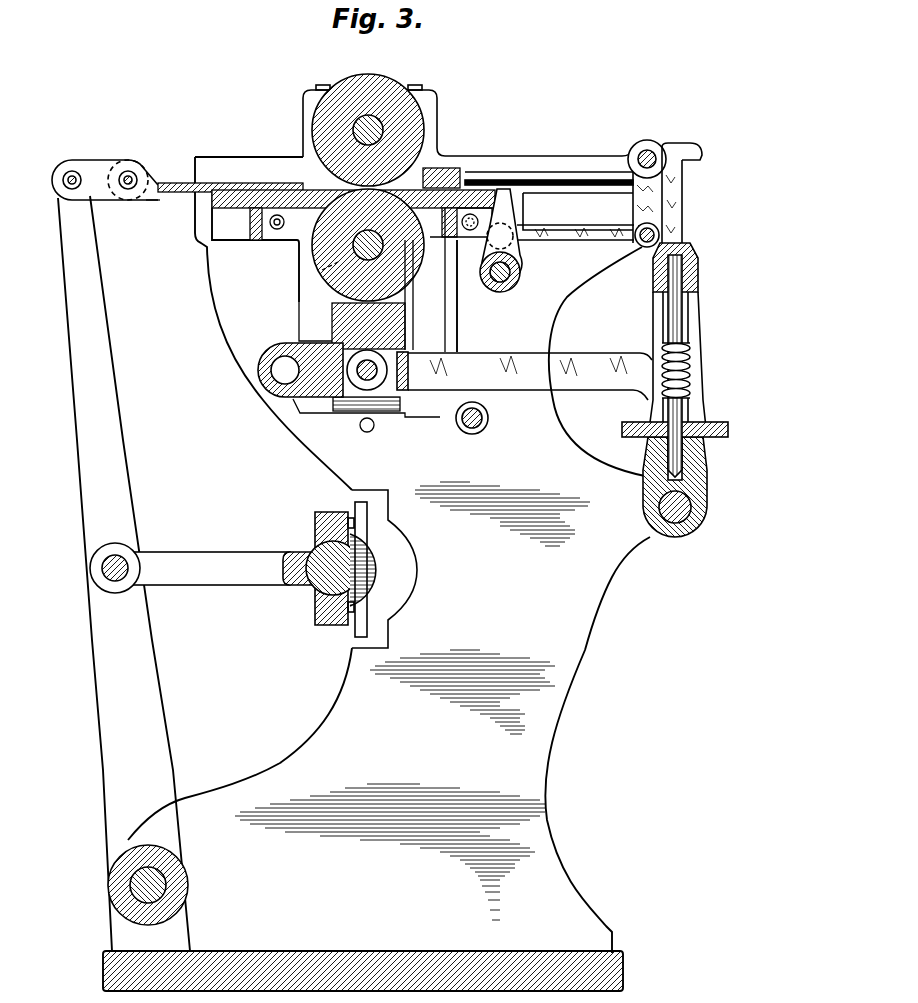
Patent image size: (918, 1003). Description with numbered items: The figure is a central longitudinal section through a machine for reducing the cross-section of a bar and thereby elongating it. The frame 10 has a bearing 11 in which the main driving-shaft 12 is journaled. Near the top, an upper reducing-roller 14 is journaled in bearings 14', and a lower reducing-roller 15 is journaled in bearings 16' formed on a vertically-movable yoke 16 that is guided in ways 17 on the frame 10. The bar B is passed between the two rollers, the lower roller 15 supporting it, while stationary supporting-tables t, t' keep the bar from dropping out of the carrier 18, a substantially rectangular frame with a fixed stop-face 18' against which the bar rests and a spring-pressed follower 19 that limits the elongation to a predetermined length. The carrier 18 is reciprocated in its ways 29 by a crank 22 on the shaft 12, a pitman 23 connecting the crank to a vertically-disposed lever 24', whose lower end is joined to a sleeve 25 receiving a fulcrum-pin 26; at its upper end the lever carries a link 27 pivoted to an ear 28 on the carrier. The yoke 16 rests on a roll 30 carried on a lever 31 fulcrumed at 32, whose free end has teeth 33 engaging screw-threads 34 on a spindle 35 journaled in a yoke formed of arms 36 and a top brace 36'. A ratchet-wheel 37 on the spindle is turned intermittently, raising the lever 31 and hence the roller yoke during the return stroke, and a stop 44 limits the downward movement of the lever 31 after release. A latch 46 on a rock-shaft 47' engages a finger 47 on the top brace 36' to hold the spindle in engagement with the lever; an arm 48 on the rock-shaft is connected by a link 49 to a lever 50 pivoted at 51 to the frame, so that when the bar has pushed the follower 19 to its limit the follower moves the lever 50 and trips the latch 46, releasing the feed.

The frame 10 is at (572, 658).
The bearing 11 is at (355, 623).
The main driving-shaft 12 is at (382, 570).
The reducing-roller 14 is at (383, 126).
The bearings 14' is at (362, 121).
The reducing-roller 15 is at (398, 277).
The yoke 16 is at (382, 320).
The bearings 16' is at (297, 280).
The ways 17 is at (331, 300).
The carrier 18 is at (230, 167).
The stop-face 18' is at (210, 164).
The follower 19 is at (424, 170).
The crank 22 is at (303, 592).
The pitman 23 is at (202, 558).
The lever 24' is at (124, 573).
The sleeve 25 is at (188, 885).
The fulcrum-pin 26 is at (160, 870).
The link 27 is at (95, 178).
The ear 28 is at (150, 192).
The ways 29 is at (549, 195).
The roll 30 is at (360, 387).
The lever 31 is at (525, 380).
The fulcrum 32 is at (283, 387).
The teeth 33 is at (663, 365).
The screw-threads 34 is at (692, 362).
The spindle 35 is at (687, 318).
The arm 36 is at (694, 414).
The top brace 36' is at (697, 267).
The ratchet-wheel 37 is at (730, 427).
The stop 44 is at (473, 432).
The latch 46 is at (683, 155).
The finger 47 is at (688, 200).
The rock-shaft 47' is at (645, 145).
The arm 48 is at (633, 207).
The link 49 is at (572, 233).
The lever 50 is at (487, 245).
The pivot 51 is at (513, 280).
The bar B is at (242, 192).
The supporting-table t is at (268, 186).
The supporting-table t' is at (461, 183).